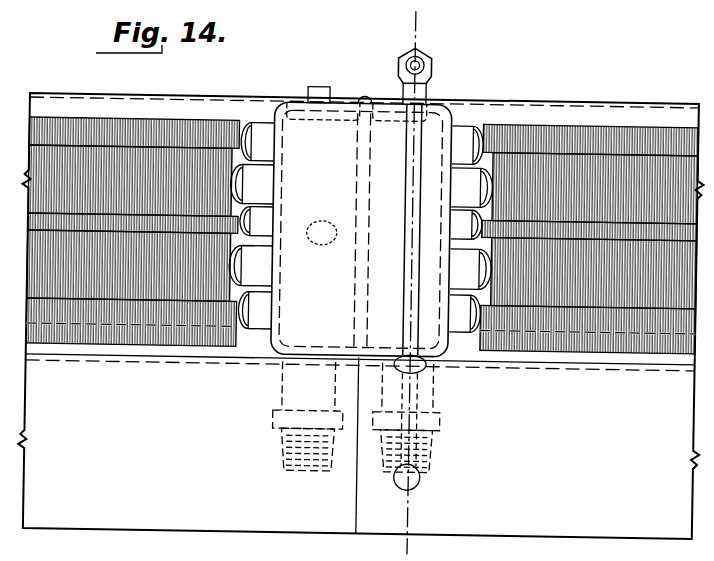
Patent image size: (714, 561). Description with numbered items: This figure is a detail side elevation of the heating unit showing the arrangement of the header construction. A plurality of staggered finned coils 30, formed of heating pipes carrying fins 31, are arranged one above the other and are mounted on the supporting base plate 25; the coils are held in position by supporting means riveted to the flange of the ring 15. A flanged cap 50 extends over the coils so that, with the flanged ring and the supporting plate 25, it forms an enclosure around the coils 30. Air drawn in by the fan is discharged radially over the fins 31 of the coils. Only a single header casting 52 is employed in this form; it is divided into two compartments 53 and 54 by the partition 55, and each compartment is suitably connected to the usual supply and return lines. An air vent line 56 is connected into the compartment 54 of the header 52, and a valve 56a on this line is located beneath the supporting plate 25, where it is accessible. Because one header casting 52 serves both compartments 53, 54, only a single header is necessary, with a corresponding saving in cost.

The ring 15 is at (444, 12).
The supporting base plate 25 is at (571, 349).
The finned coils 30 is at (254, 174).
The fins 31 is at (250, 137).
The flanged cap 50 is at (231, 104).
The header casting 52 is at (338, 98).
The compartment 53 is at (300, 209).
The compartment 54 is at (388, 191).
The partition 55 is at (362, 202).
The air vent line 56 is at (430, 52).
The valve 56a is at (427, 480).